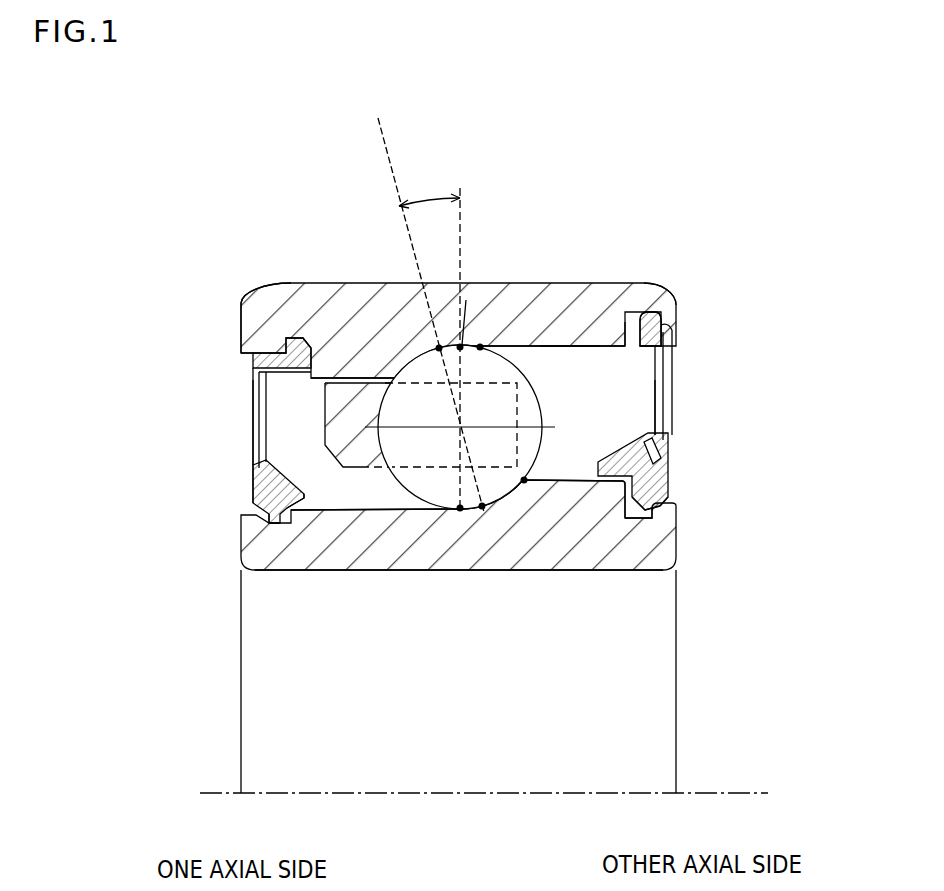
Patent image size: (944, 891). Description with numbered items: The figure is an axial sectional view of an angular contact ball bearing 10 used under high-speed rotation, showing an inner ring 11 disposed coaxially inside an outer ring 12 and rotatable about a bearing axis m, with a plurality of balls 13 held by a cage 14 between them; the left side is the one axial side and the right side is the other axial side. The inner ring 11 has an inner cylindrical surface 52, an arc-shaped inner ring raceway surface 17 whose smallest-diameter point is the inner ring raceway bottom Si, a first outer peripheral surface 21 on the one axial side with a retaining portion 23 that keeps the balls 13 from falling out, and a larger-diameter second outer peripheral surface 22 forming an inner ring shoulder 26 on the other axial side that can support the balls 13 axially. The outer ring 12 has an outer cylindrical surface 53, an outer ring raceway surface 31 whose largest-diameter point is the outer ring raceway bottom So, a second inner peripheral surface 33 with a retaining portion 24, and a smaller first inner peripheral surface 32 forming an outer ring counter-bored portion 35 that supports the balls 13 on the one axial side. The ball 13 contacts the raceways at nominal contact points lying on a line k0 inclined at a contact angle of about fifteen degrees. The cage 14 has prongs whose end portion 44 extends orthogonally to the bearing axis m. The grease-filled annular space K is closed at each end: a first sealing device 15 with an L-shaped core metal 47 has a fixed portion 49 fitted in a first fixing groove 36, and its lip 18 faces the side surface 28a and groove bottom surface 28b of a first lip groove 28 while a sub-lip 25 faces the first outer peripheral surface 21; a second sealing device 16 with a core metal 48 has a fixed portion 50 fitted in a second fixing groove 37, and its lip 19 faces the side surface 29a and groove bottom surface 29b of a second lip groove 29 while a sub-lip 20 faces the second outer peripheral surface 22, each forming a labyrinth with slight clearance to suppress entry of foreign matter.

The ball bearing 10 is at (733, 207).
The inner ring 11 is at (283, 572).
The outer ring 12 is at (357, 305).
The ball 13 is at (424, 514).
The cage 14 is at (335, 378).
The first sealing device 15 is at (282, 435).
The second sealing device 16 is at (663, 382).
The inner ring raceway surface 17 is at (506, 492).
The lip 18 is at (280, 478).
The lip 19 is at (676, 490).
The sub-lip 20 is at (676, 425).
The first outer peripheral surface 21 is at (362, 515).
The second outer peripheral surface 22 is at (596, 366).
The retaining portion 23 is at (404, 513).
The retaining portion 24 is at (517, 370).
The sub-lip 25 is at (270, 443).
The inner ring shoulder 26 is at (588, 560).
The first lip groove 28 is at (124, 483).
The side surface 28a is at (262, 500).
The groove bottom surface 28b is at (269, 512).
The second lip groove 29 is at (845, 475).
The side surface 29a is at (660, 515).
The groove bottom surface 29b is at (662, 551).
The outer ring raceway surface 31 is at (417, 367).
The first inner peripheral surface 32 is at (311, 572).
The second inner peripheral surface 33 is at (540, 361).
The outer ring counter-bored portion 35 is at (348, 367).
The first fixing groove 36 is at (240, 332).
The second fixing groove 37 is at (660, 283).
The end portion 44 is at (577, 347).
The core metal 47 is at (252, 423).
The core metal 48 is at (676, 395).
The fixed portion 49 is at (256, 368).
The fixed portion 50 is at (676, 332).
The cylindrical surface 52 is at (584, 491).
The cylindrical surface 53 is at (633, 318).
The annular space K is at (637, 285).
The bearing axis m is at (714, 793).
The line k0 is at (378, 120).
The outer ring raceway bottom So is at (466, 300).
The inner ring raceway bottom Si is at (461, 513).